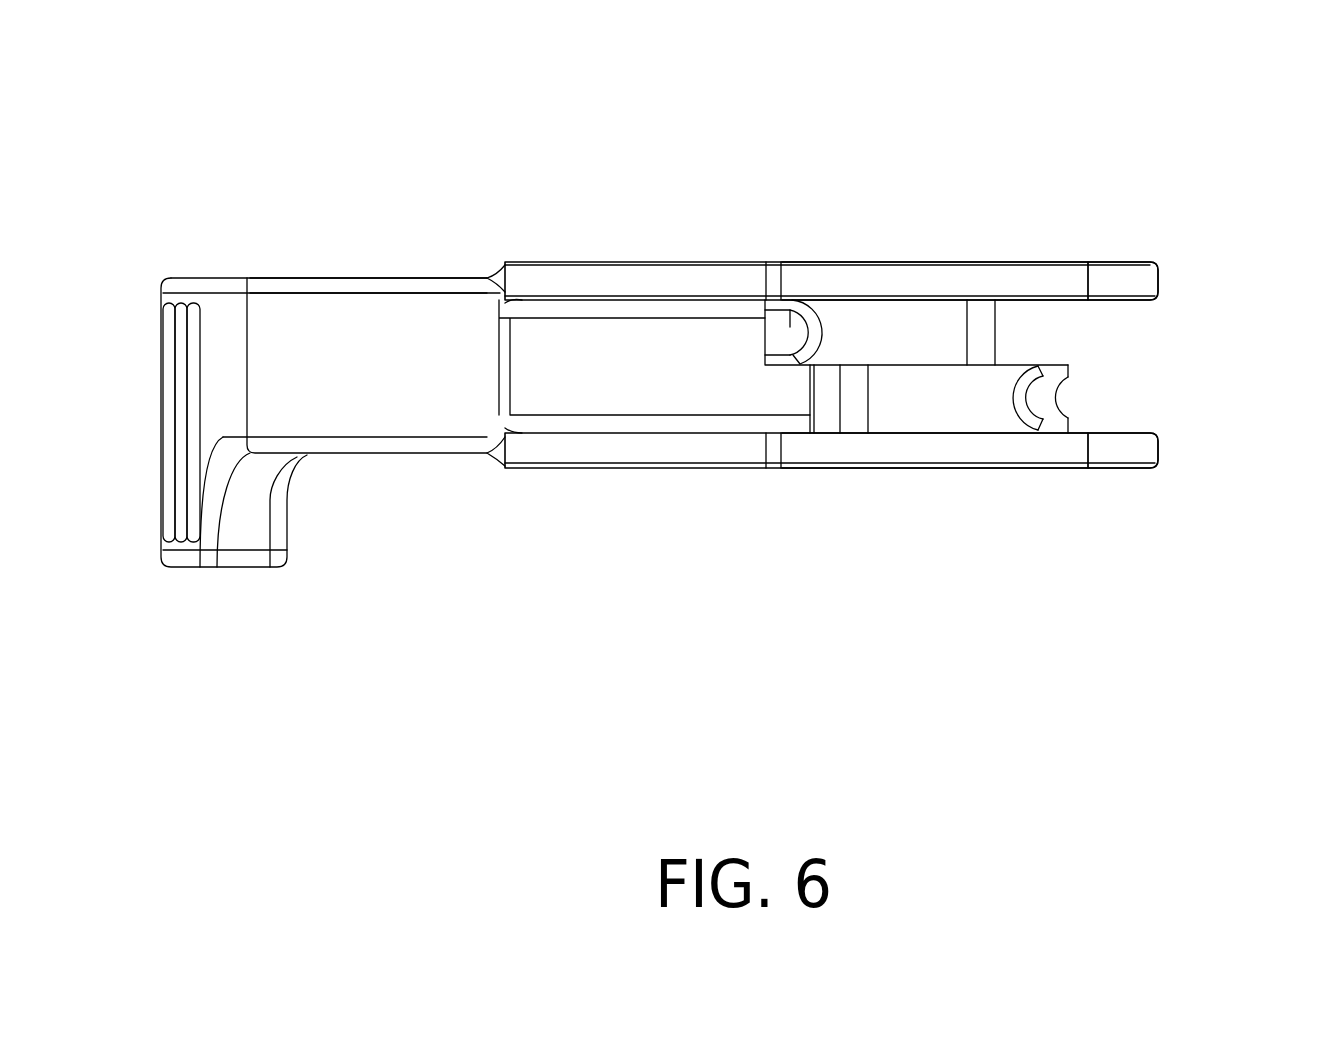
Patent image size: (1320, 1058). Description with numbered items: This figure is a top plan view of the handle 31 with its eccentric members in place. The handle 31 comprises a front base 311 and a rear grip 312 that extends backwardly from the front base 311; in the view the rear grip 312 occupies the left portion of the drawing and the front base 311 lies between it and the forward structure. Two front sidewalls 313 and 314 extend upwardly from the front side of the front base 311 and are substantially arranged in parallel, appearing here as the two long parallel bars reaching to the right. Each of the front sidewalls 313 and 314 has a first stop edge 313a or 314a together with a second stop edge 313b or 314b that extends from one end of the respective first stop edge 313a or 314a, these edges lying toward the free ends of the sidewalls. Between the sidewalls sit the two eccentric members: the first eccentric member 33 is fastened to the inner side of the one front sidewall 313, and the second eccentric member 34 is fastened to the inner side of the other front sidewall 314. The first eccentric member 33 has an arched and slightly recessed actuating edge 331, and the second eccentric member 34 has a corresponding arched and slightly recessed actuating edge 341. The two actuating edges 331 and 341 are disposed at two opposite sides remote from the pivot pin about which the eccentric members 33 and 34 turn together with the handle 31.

The handle 31 is at (433, 178).
The front base 311 is at (575, 330).
The rear grip 312 is at (395, 345).
The front sidewall 313 is at (650, 262).
The first stop edge 313a is at (1018, 280).
The second stop edge 313b is at (1128, 275).
The front sidewall 314 is at (640, 472).
The first stop edge 314a is at (1018, 447).
The second stop edge 314b is at (1127, 452).
The first eccentric member 33 is at (870, 330).
The actuating edge 331 is at (797, 335).
The second eccentric member 34 is at (935, 402).
The actuating edge 341 is at (1043, 397).